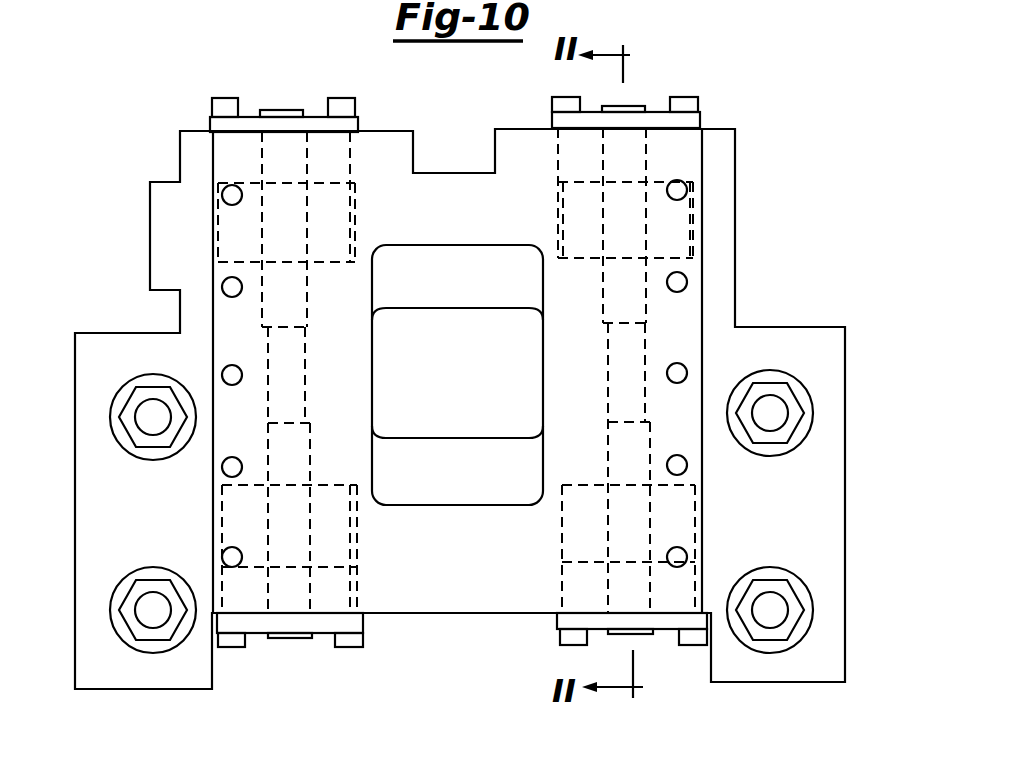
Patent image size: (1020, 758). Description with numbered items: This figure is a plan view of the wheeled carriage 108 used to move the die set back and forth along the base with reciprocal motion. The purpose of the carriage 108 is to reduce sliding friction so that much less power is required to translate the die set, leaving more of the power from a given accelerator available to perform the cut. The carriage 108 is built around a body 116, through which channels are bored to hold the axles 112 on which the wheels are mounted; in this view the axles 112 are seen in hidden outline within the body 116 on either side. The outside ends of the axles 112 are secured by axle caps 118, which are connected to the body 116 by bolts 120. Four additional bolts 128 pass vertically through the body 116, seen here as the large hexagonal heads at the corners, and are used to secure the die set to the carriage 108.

The wheeled carriage 108 is at (756, 179).
The axles 112 is at (268, 110).
The body 116 is at (703, 326).
The axle caps 118 is at (313, 117).
The bolts 120 is at (223, 98).
The bolts 128 is at (118, 592).